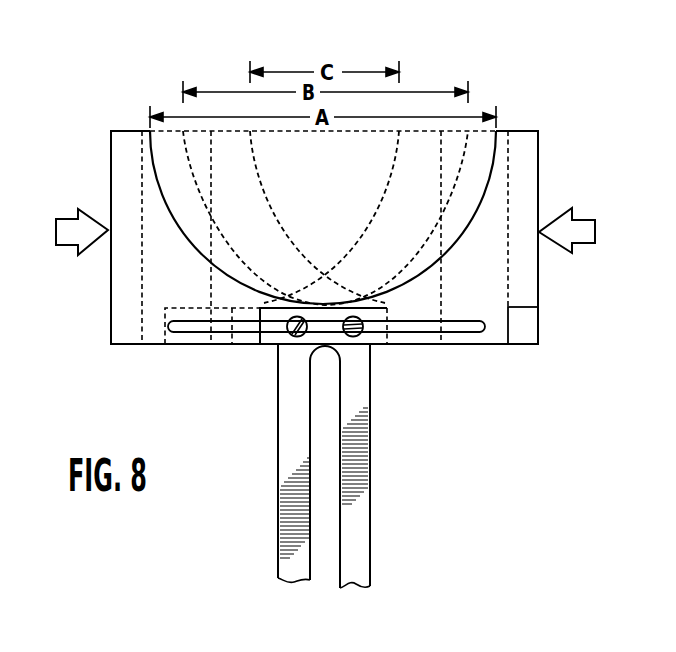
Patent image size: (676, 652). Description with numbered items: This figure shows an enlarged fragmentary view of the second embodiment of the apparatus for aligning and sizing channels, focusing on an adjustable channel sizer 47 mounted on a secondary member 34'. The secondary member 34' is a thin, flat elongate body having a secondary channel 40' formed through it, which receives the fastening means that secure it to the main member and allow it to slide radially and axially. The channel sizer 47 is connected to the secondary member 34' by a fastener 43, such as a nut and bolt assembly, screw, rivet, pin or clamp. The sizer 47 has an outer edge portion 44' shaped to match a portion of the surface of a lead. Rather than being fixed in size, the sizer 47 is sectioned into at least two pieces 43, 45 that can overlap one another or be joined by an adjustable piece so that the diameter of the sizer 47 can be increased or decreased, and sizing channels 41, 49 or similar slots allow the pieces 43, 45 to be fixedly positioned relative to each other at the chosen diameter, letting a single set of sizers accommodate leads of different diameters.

The secondary member 34' is at (262, 463).
The secondary channel 40' is at (386, 466).
The sizing channel 41 is at (196, 322).
The fastener 43 is at (349, 338).
The outer edge portion 44' is at (323, 154).
The sectioned piece 45 is at (532, 163).
The channel sizer 47 is at (123, 162).
The sizing channel 49 is at (425, 323).